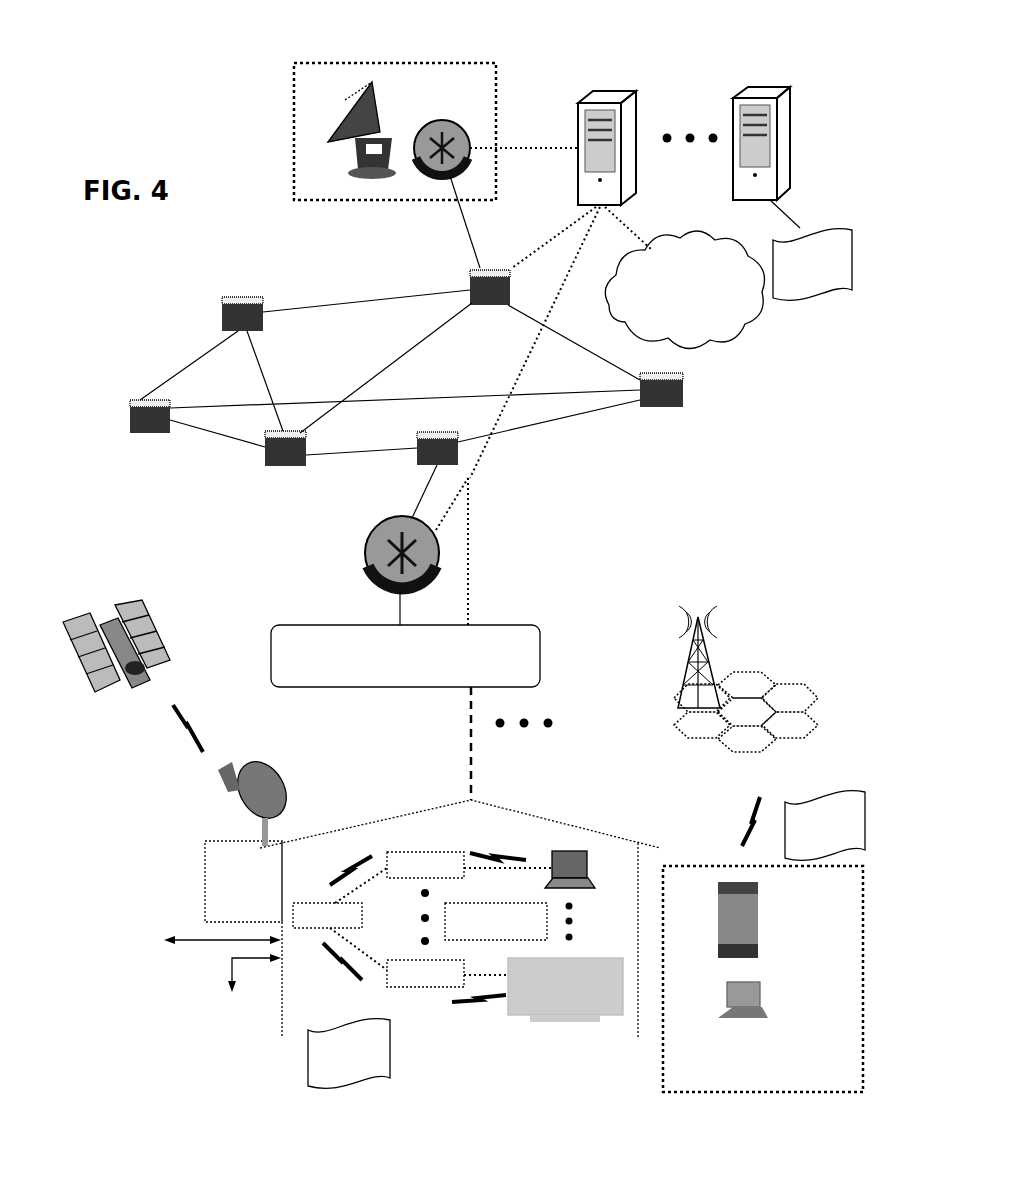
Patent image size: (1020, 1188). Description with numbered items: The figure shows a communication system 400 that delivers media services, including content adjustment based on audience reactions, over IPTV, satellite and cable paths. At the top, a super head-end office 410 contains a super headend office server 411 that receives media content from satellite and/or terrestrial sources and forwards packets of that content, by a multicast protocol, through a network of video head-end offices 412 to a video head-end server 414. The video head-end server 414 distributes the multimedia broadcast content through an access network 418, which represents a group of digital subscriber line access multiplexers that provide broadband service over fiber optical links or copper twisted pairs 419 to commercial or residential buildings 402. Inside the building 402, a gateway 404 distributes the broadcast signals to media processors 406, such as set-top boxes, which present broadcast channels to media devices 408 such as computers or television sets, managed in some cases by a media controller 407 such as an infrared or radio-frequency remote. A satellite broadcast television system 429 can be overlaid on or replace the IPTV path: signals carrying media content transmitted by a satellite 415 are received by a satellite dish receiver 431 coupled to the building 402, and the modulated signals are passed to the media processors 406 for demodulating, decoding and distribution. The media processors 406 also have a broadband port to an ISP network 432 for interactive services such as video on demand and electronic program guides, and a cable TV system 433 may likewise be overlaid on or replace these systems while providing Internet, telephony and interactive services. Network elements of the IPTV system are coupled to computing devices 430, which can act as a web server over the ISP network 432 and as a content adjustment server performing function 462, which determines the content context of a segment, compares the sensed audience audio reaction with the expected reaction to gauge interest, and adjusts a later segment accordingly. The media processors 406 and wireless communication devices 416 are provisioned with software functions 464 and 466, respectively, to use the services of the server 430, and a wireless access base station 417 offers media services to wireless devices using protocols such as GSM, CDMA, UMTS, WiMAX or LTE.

The communication system 400 is at (103, 158).
The super head-end office 410 is at (292, 140).
The super headend office server 411 is at (425, 132).
The computing devices 430 is at (766, 88).
The ISP network 432 is at (670, 330).
The function 462 is at (797, 275).
The video head-end offices 412 is at (128, 418).
The video head-end server 414 is at (365, 555).
The access network 418 is at (542, 651).
The copper twisted pairs 419 is at (468, 770).
The satellite 415 is at (78, 652).
The satellite broadcast television system 429 is at (200, 688).
The wireless access base station 417 is at (745, 672).
The satellite dish receiver 431 is at (190, 842).
The cable TV system 433 is at (210, 1061).
The buildings 402 is at (472, 1059).
The gateway 404 is at (352, 924).
The media processors 406 is at (460, 874).
The media controller 407 is at (530, 932).
The media devices 408 is at (576, 851).
The software function 464 is at (359, 1000).
The wireless communication devices 416 is at (766, 895).
The software function 466 is at (760, 866).